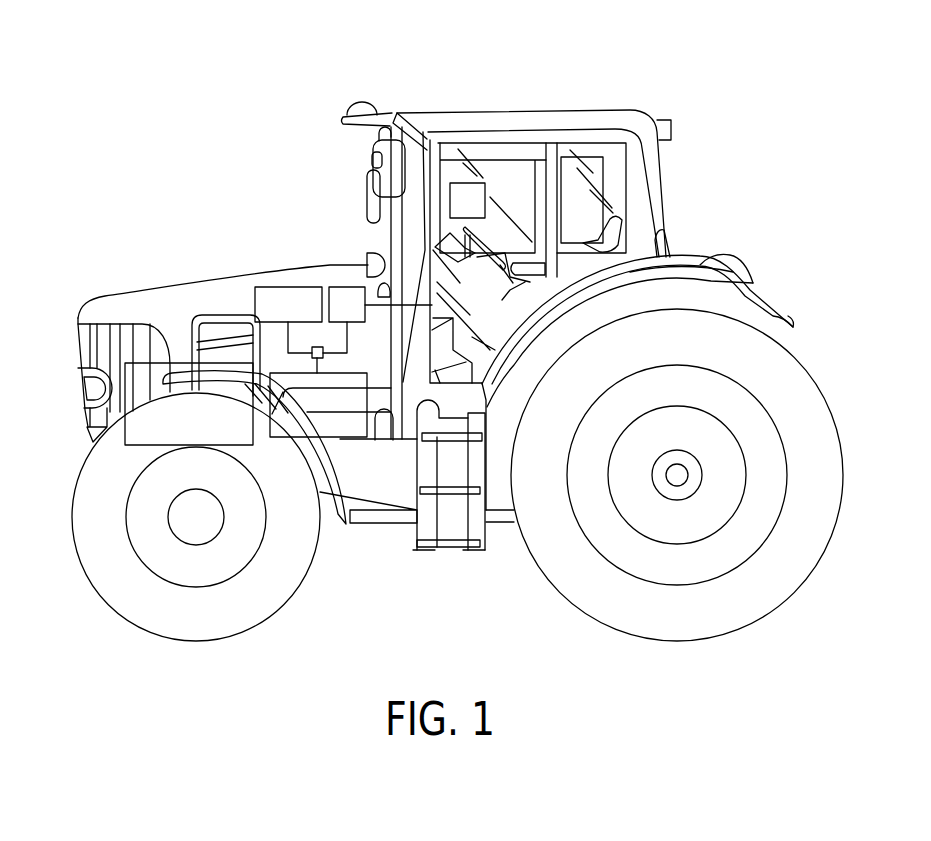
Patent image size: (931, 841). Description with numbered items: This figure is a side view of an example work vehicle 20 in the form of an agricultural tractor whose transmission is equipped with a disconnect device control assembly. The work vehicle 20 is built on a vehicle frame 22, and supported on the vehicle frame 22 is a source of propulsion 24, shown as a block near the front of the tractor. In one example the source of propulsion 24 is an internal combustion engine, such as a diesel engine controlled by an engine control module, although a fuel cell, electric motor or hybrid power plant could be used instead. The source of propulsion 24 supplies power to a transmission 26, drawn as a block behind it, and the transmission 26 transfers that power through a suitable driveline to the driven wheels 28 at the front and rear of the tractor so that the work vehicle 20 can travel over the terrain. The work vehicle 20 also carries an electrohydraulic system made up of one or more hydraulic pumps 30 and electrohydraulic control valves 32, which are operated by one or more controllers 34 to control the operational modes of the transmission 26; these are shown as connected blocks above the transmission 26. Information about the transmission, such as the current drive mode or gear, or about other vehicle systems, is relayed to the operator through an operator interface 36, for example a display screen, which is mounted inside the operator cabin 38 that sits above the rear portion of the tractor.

The work vehicle 20 is at (766, 110).
The vehicle frame 22 is at (495, 516).
The source of propulsion 24 is at (130, 446).
The transmission 26 is at (354, 438).
The driven wheels 28 is at (178, 531).
The hydraulic pumps 30 is at (288, 287).
The electrohydraulic control valves 32 is at (313, 348).
The controllers 34 is at (346, 287).
The operator interface 36 is at (481, 187).
The operator cabin 38 is at (606, 118).